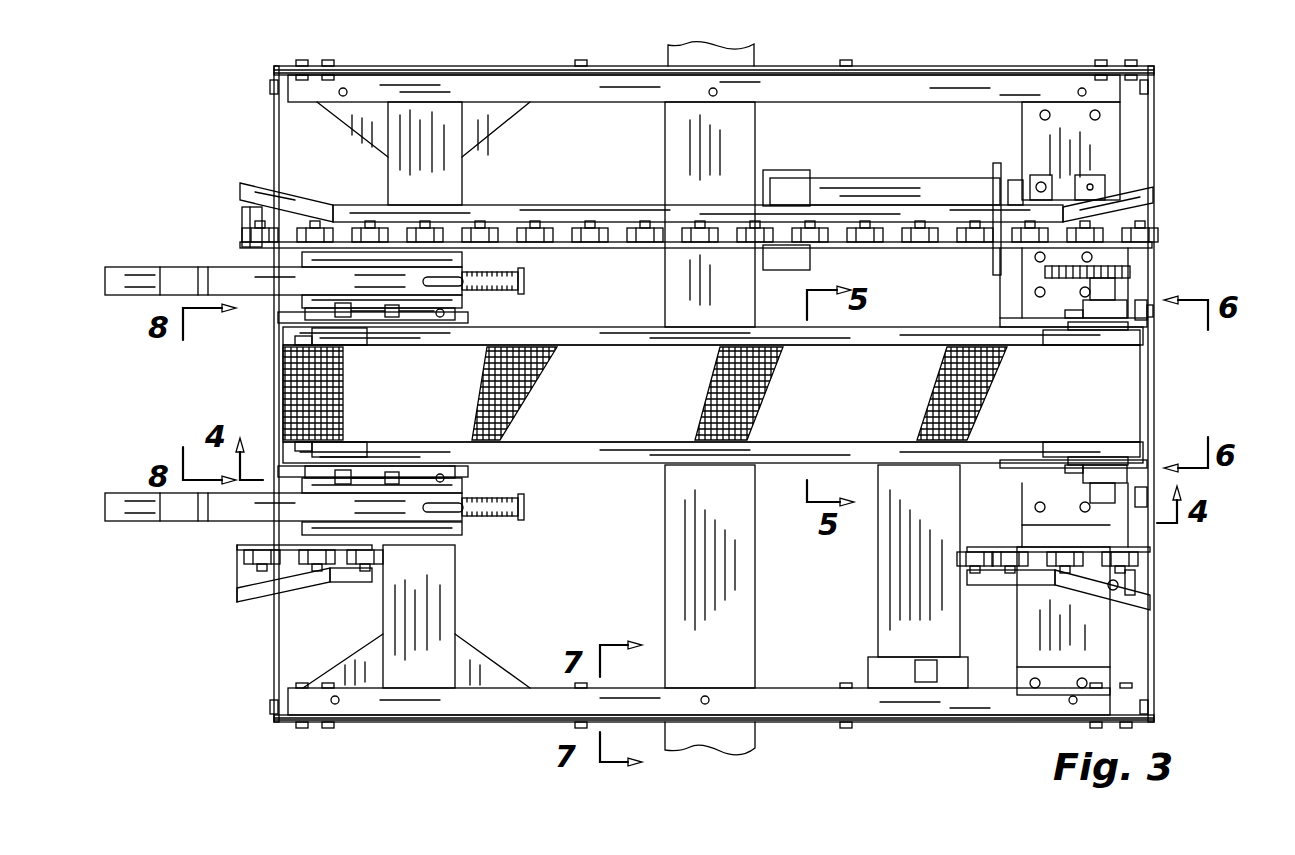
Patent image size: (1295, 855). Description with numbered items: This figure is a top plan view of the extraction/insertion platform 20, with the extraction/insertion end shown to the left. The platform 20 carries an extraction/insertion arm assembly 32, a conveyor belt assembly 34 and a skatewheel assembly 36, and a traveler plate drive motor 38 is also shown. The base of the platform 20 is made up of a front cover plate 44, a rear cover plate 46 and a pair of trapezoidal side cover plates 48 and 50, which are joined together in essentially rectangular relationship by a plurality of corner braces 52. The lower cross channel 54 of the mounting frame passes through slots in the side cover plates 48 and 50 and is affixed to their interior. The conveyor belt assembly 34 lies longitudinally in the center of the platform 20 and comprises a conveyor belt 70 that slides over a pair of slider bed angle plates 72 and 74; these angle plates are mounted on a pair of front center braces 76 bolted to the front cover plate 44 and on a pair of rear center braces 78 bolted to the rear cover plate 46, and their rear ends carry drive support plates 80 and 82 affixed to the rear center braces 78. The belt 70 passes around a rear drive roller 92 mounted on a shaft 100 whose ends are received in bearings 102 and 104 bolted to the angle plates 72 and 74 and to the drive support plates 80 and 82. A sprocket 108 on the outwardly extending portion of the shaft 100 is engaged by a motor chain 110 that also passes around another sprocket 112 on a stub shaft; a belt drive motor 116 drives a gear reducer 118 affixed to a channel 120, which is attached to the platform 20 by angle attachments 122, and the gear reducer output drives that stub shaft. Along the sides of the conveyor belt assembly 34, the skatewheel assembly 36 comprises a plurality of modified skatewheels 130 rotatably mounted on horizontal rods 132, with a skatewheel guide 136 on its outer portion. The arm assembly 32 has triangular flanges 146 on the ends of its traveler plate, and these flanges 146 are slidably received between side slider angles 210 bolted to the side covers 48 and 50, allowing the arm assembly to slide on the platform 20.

The extraction/insertion platform 20 is at (1230, 113).
The extraction/insertion arm assembly 32 is at (225, 514).
The conveyor belt assembly 34 is at (300, 380).
The skatewheel assembly 36 is at (302, 205).
The traveler plate drive motor 38 is at (898, 645).
The front cover plate 44 is at (272, 635).
The rear cover plate 46 is at (1152, 395).
The side cover plate 48 is at (968, 68).
The side cover plate 50 is at (940, 715).
The corner brace 52 is at (283, 70).
The lower cross channel 54 is at (742, 128).
The conveyor belt 70 is at (1112, 400).
The slider bed angle plate 72 is at (565, 340).
The slider bed angle plate 74 is at (560, 462).
The front center brace 76 is at (274, 316).
The rear center brace 78 is at (1143, 318).
The drive support plate 80 is at (1121, 330).
The drive support plate 82 is at (1128, 470).
The rear drive roller 92 is at (1147, 348).
The shaft 100 is at (1125, 292).
The bearing 102 is at (1103, 317).
The bearing 104 is at (1092, 470).
The sprocket 108 is at (1115, 272).
The motor chain 110 is at (1080, 300).
The sprocket 112 is at (1060, 277).
The belt drive motor 116 is at (888, 192).
The gear reducer 118 is at (1095, 188).
The channel 120 is at (1107, 120).
The angle attachment 122 is at (1097, 680).
The modified skatewheel 130 is at (358, 213).
The rod 132 is at (258, 218).
The skatewheel guide 136 is at (528, 210).
The triangular flange 146 is at (503, 120).
The side slider angle 210 is at (895, 90).